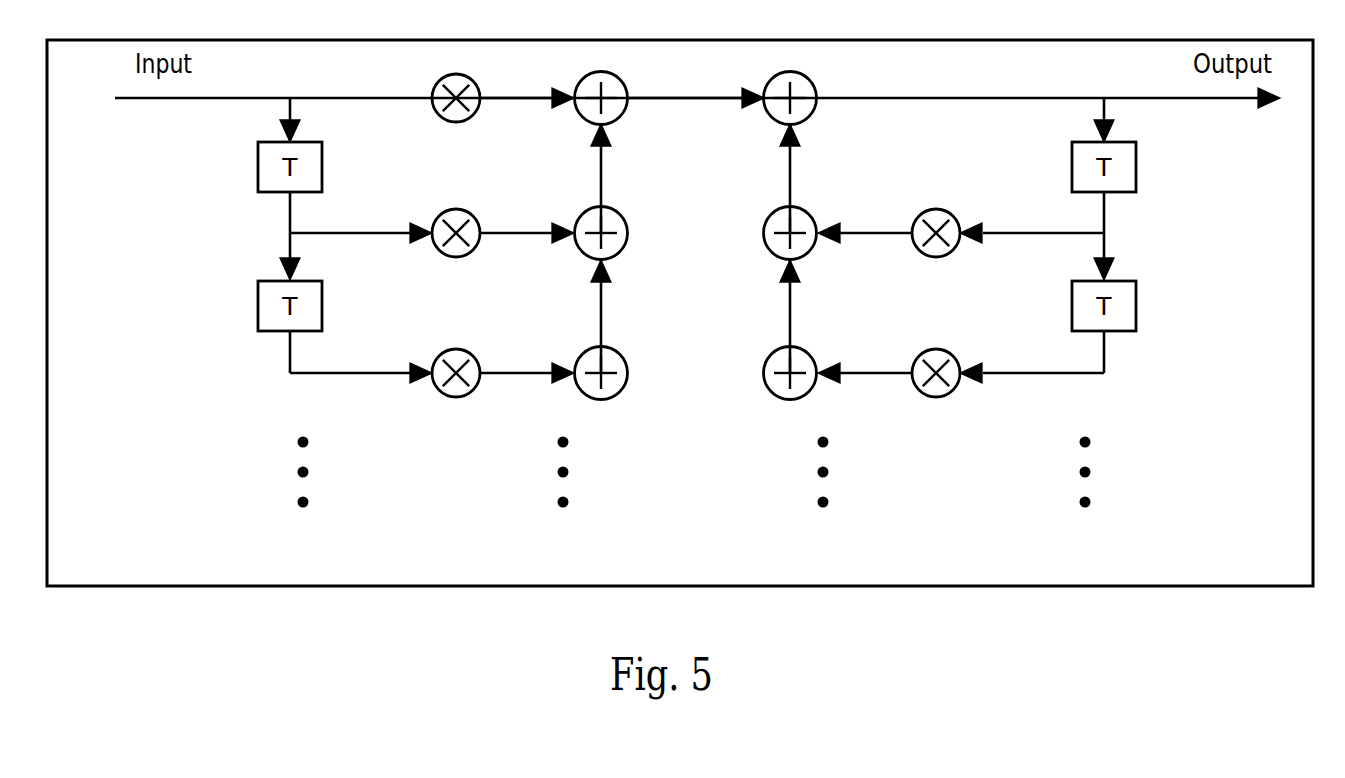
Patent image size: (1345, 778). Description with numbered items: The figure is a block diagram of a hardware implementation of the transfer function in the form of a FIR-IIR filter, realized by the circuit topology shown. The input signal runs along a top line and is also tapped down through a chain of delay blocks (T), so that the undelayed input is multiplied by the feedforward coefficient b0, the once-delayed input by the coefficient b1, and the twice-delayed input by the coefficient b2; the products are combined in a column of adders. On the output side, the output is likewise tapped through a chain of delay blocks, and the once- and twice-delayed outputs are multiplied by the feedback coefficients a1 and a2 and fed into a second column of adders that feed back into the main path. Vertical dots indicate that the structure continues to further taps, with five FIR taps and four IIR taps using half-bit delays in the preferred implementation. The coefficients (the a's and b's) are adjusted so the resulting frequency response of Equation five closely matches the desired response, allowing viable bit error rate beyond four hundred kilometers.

The filter coefficient b0 is at (456, 85).
The filter coefficient b1 is at (456, 220).
The filter coefficient b2 is at (456, 360).
The filter coefficient a1 is at (936, 220).
The filter coefficient a2 is at (936, 360).